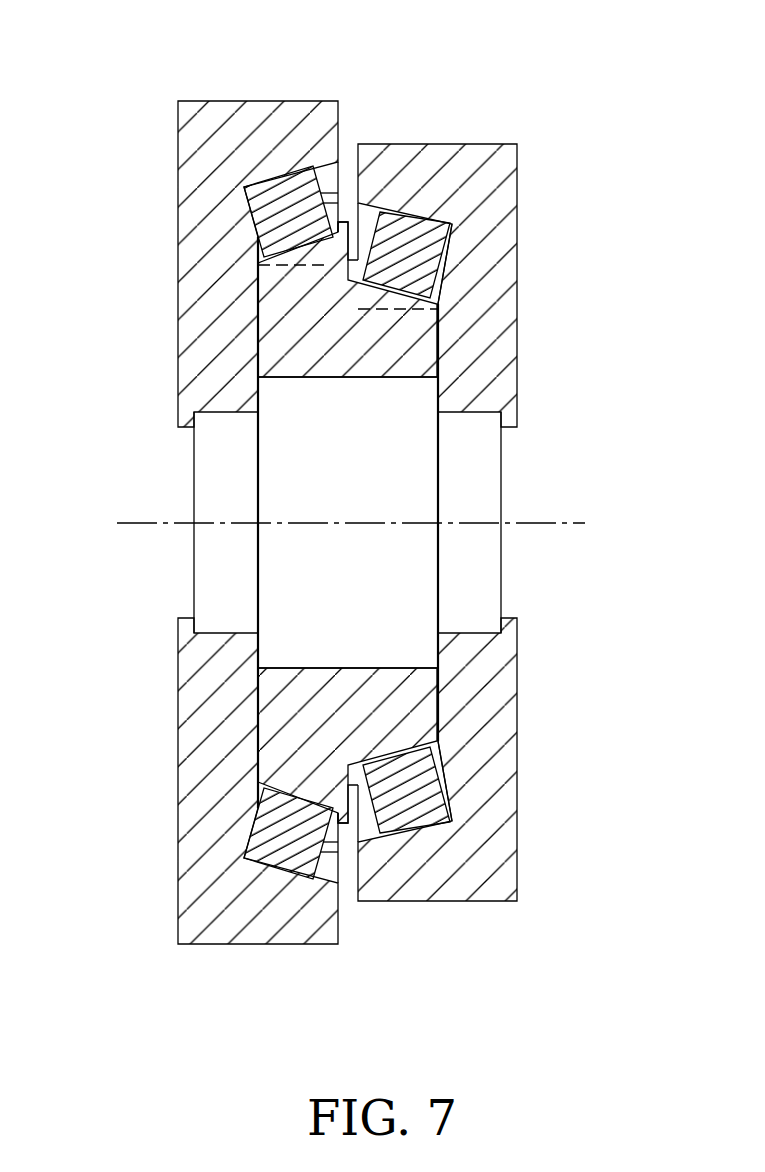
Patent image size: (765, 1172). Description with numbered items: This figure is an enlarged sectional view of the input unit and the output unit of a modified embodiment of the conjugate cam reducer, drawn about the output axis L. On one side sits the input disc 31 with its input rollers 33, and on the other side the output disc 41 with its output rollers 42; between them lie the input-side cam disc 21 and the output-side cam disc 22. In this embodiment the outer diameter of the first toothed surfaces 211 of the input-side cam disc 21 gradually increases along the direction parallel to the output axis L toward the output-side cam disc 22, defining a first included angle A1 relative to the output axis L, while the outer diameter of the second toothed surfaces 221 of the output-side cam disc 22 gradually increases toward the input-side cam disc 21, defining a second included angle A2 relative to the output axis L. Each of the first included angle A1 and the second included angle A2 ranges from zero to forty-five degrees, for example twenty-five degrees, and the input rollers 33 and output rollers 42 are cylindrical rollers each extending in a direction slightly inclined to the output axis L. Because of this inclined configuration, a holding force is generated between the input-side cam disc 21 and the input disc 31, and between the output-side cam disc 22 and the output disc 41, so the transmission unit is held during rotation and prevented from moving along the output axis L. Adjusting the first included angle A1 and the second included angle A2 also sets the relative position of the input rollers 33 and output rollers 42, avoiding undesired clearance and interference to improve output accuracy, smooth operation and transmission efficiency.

The input-side cam disc 21 is at (430, 356).
The first toothed surface 211 is at (440, 282).
The output-side cam disc 22 is at (258, 352).
The second toothed surface 221 is at (262, 222).
The input disc 31 is at (515, 186).
The input roller 33 is at (443, 244).
The output disc 41 is at (192, 178).
The output roller 42 is at (282, 192).
The first included angle A1 is at (364, 307).
The second included angle A2 is at (333, 268).
The output axis L is at (366, 522).